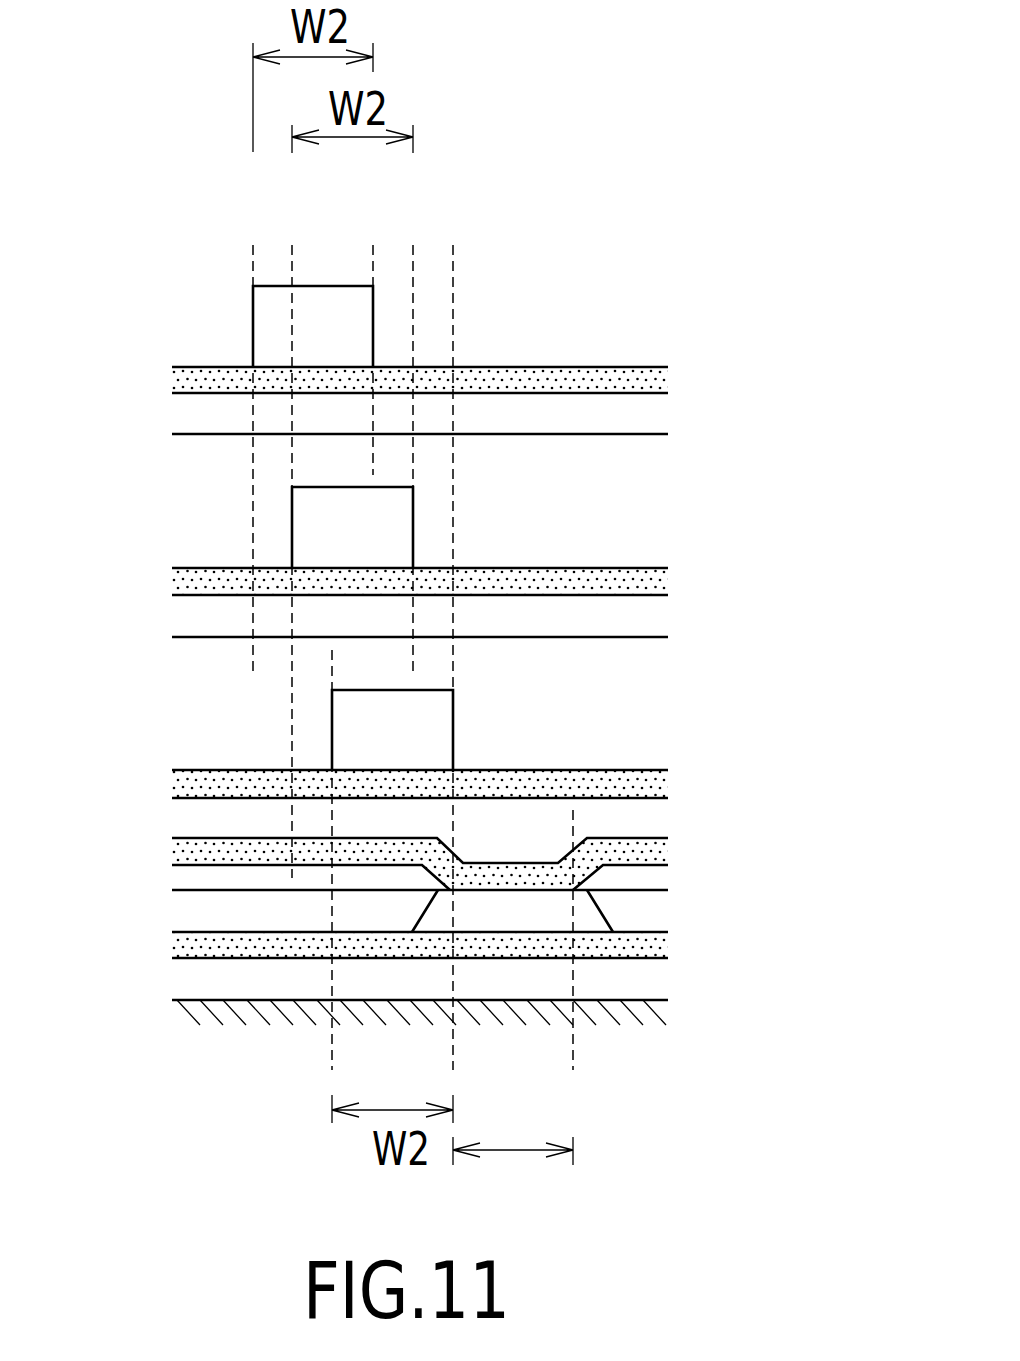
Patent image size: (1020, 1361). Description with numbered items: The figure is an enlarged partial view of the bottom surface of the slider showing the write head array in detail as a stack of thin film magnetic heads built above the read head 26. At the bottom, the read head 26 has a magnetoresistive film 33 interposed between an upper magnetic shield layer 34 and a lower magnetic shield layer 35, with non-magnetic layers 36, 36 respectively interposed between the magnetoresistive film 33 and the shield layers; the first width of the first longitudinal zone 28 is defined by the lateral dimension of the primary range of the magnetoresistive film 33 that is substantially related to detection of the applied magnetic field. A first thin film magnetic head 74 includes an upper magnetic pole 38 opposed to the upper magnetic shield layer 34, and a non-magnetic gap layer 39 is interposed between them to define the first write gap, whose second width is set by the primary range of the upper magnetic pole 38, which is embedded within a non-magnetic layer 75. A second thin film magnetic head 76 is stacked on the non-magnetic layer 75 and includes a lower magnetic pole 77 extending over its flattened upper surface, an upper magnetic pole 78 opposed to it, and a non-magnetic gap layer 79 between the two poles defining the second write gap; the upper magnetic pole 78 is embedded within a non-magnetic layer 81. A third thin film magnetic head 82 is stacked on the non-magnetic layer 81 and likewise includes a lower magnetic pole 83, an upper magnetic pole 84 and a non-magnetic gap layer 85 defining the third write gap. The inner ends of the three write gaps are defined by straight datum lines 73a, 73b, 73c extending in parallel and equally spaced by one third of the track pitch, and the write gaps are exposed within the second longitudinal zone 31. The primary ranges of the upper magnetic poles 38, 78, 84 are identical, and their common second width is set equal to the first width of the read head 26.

The read head 26 is at (668, 877).
The first longitudinal zone 28 is at (573, 1080).
The second longitudinal zone 31 is at (452, 230).
The magnetoresistive film 33 is at (588, 913).
The upper magnetic shield layer 34 is at (610, 815).
The lower magnetic shield layer 35 is at (617, 983).
The non-magnetic layer 36 is at (630, 847).
The upper magnetic pole 38 is at (453, 720).
The non-magnetic gap layer 39 is at (487, 778).
The straight datum line 73a is at (453, 535).
The straight datum line 73b is at (413, 323).
The straight datum line 73c is at (373, 468).
The first thin film magnetic head 74 is at (528, 727).
The non-magnetic layer 75 is at (643, 645).
The second thin film magnetic head 76 is at (197, 522).
The lower magnetic pole 77 is at (205, 609).
The upper magnetic pole 78 is at (313, 525).
The non-magnetic gap layer 79 is at (208, 570).
The non-magnetic layer 81 is at (647, 447).
The third thin film magnetic head 82 is at (220, 285).
The lower magnetic pole 83 is at (205, 408).
The upper magnetic pole 84 is at (270, 318).
The non-magnetic gap layer 85 is at (208, 377).